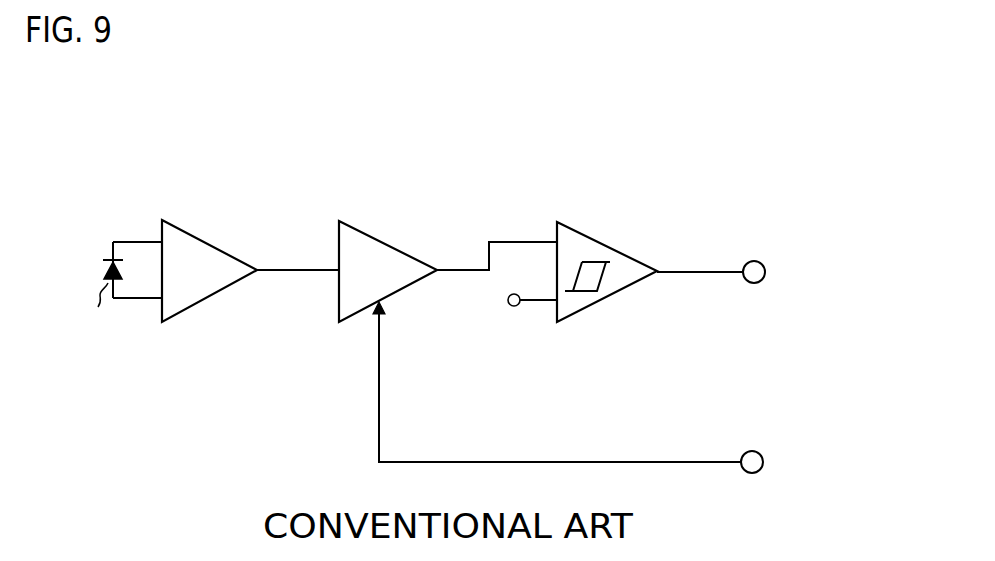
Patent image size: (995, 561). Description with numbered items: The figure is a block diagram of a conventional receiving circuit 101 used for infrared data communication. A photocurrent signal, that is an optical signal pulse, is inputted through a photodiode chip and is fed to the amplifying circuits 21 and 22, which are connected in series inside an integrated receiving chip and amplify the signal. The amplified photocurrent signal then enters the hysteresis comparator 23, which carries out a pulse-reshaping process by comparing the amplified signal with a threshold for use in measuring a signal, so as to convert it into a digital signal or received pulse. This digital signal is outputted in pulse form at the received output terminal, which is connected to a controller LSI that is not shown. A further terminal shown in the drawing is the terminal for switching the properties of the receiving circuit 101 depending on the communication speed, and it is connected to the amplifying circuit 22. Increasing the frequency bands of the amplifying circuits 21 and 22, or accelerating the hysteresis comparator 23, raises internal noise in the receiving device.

The receiving circuit 101 is at (752, 196).
The amplifying circuit 21 is at (189, 233).
The amplifying circuit 22 is at (364, 234).
The hysteresis comparator 23 is at (581, 234).